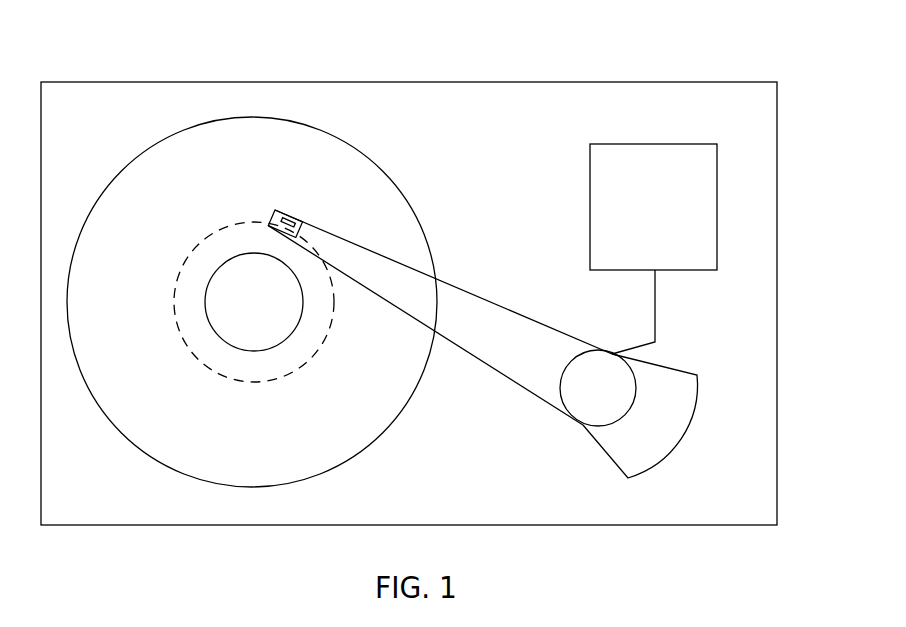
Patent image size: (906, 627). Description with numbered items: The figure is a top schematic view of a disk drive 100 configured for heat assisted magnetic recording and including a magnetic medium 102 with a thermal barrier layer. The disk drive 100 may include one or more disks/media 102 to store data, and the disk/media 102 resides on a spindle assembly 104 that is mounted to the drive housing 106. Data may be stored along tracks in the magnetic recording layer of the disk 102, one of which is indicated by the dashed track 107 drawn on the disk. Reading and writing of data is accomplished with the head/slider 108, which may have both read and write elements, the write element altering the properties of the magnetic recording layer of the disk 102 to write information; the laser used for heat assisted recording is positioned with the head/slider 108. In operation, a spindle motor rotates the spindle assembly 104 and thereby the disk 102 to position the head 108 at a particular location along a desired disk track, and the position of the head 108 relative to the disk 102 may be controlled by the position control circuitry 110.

The disk drive 100 is at (207, 55).
The magnetic medium 102 is at (364, 155).
The spindle assembly 104 is at (270, 306).
The drive housing 106 is at (530, 82).
The track 107 is at (230, 223).
The head/slider 108 is at (300, 225).
The position control circuitry 110 is at (667, 221).